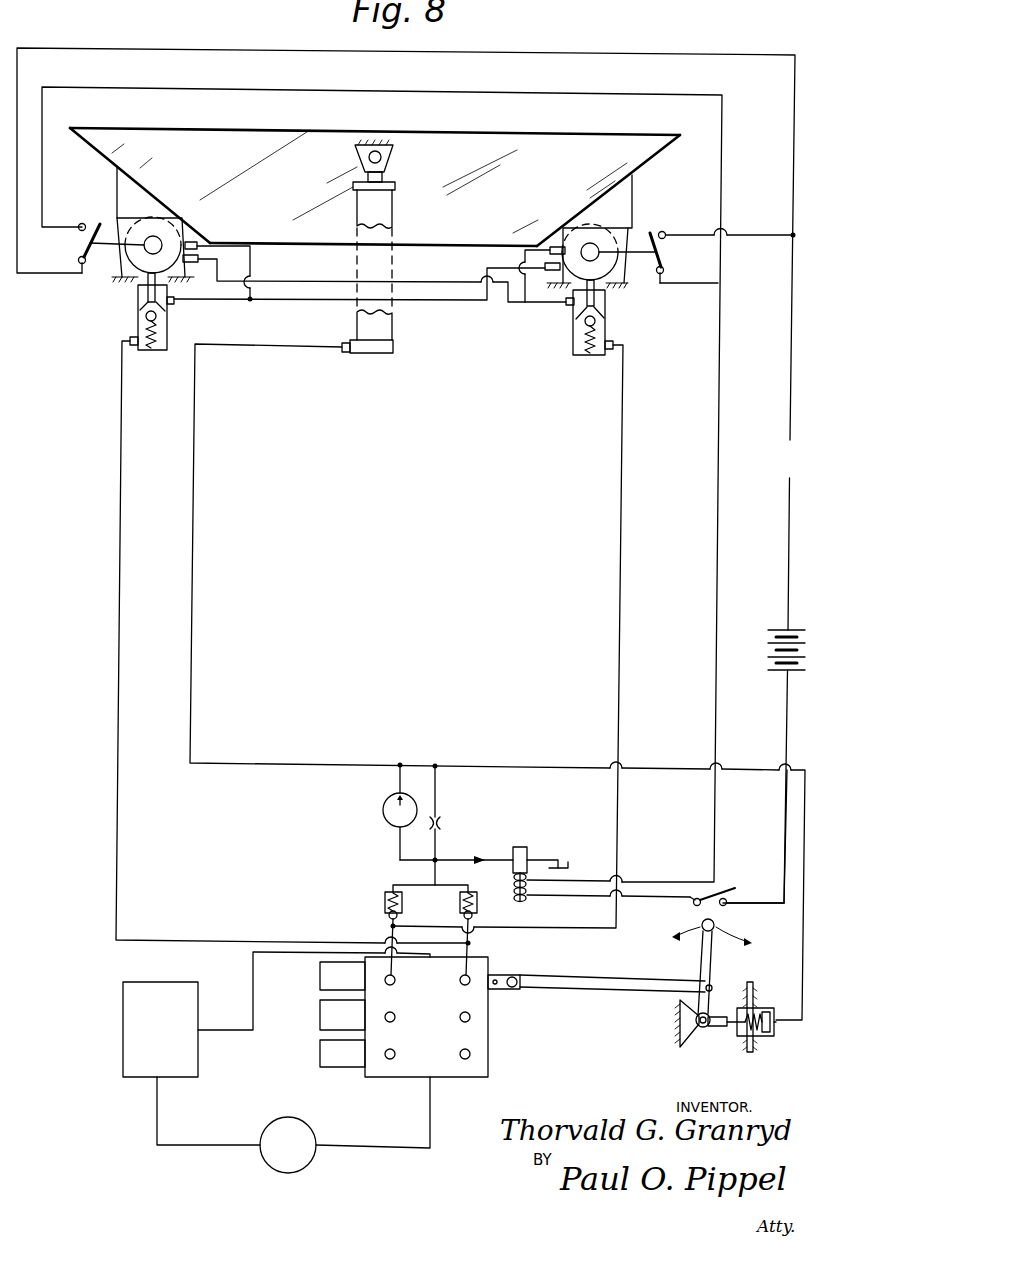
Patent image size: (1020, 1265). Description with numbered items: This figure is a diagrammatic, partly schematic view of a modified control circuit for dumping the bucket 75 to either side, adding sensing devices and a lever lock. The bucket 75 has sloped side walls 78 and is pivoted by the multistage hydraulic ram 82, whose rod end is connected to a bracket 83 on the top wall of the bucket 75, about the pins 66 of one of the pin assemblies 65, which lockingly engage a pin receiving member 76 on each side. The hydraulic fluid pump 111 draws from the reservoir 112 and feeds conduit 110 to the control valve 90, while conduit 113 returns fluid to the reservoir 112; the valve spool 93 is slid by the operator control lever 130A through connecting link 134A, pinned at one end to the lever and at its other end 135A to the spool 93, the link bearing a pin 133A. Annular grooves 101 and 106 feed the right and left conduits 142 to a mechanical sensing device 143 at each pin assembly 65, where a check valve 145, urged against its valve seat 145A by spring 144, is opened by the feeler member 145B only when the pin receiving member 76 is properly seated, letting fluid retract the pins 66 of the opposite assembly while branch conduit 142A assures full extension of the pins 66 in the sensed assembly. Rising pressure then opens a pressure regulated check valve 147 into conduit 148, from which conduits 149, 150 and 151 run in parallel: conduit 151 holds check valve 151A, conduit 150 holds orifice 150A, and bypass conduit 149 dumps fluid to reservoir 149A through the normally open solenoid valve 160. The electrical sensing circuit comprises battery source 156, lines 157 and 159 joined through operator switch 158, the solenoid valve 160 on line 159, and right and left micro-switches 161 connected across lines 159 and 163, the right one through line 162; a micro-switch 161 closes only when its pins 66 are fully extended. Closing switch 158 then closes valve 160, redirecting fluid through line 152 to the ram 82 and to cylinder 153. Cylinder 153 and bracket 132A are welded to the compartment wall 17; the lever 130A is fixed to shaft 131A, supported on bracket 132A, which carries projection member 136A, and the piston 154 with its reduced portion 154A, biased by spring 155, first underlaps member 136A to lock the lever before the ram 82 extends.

The line 163 is at (211, 47).
The line 159 is at (44, 125).
The bucket 75 is at (318, 127).
The hopper side wall 78 is at (99, 150).
The pin receiving member 76 is at (117, 194).
The pins 66 is at (163, 237).
The pin assembly 65 is at (117, 262).
The micro-switch 161 is at (88, 243).
The line 162 is at (760, 235).
The bracket 83 is at (396, 158).
The multistage hydraulic ram 82 is at (394, 210).
The mechanical sensing device 143 is at (168, 324).
The check valve 145 is at (143, 318).
The spring 144 is at (148, 350).
The valve seat 145A is at (142, 306).
The feeler member 145B is at (168, 292).
The branch conduit 142A is at (256, 259).
The conduit 142 is at (432, 281).
The line 152 is at (260, 762).
The conduit 151 is at (398, 779).
The pressure regulated check valve 151A is at (384, 813).
The conduit 150 is at (441, 785).
The orifice 150A is at (443, 825).
The conduit 148 is at (432, 872).
The pressure regulated check valve 147 is at (385, 903).
The bypass conduit 149 is at (466, 858).
The solenoid valve 160 is at (530, 848).
The reservoir 149A is at (570, 868).
The line 157 is at (786, 812).
The operator switch 158 is at (717, 890).
The battery source 156 is at (789, 628).
The hydraulic fluid reservoir 112 is at (123, 1010).
The hydraulic fluid conduit 113 is at (253, 1001).
The hydraulic fluid pump 111 is at (274, 1172).
The hydraulic fluid conduit 110 is at (400, 1150).
The control valve 90 is at (479, 1068).
The annular groove 101 is at (392, 986).
The annular groove 106 is at (464, 986).
The valve spool 93 is at (502, 968).
The pinned end 135A is at (513, 988).
The connecting link 134A is at (602, 993).
The operator control lever 130A is at (710, 966).
The pivot pin 133A is at (711, 985).
The shaft 131A is at (696, 1022).
The bracket 132A is at (687, 1047).
The operator's compartment wall 17 is at (758, 992).
The projection member 136A is at (713, 1028).
The spring 155 is at (738, 1014).
The piston 154 is at (766, 1012).
The reduced longitudinal portion 154A is at (740, 1037).
The cylinder 153 is at (755, 1048).